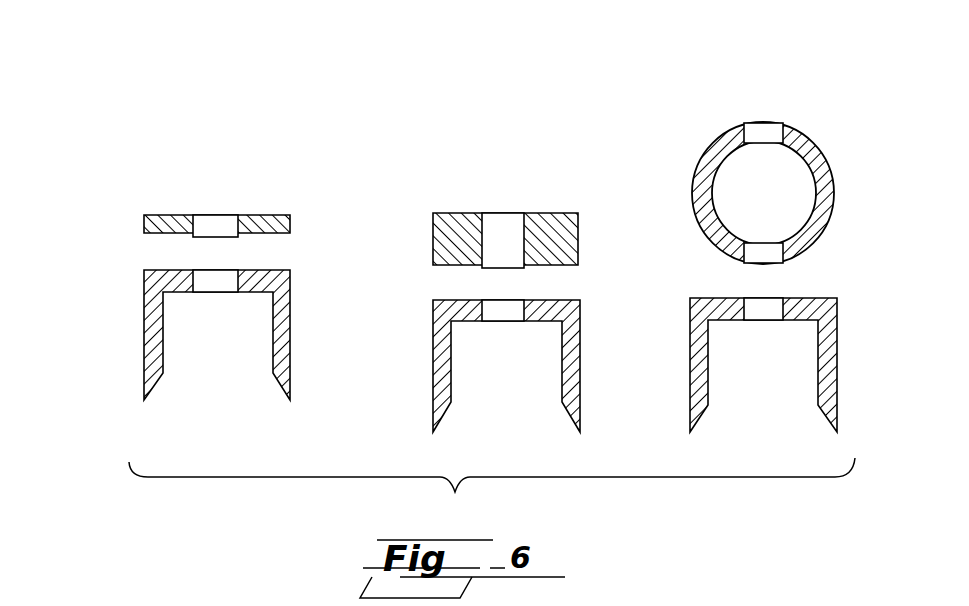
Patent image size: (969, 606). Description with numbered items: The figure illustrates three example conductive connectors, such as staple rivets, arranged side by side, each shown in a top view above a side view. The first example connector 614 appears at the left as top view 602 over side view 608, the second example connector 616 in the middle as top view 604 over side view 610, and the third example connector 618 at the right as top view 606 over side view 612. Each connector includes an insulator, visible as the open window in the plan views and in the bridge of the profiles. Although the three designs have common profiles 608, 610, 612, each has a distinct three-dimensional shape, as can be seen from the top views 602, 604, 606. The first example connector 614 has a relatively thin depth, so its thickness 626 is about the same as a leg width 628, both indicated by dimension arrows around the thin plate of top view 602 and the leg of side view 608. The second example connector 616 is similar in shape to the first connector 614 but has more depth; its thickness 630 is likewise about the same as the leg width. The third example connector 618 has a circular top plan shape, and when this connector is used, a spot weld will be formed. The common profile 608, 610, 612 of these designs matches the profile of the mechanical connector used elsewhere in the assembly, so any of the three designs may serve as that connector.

The top view 602 is at (191, 173).
The top view 604 is at (454, 194).
The top view 606 is at (718, 174).
The side view 608 is at (197, 357).
The side view 610 is at (455, 380).
The side view 612 is at (717, 356).
The first example connector 614 is at (186, 80).
The second example connector 616 is at (443, 88).
The third example connector 618 is at (746, 52).
The thickness 626 is at (281, 189).
The leg width 628 is at (290, 285).
The thickness 630 is at (571, 205).